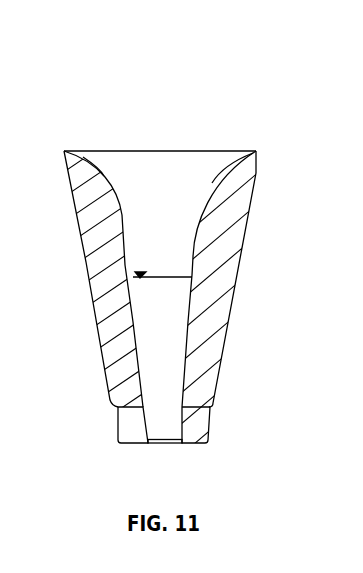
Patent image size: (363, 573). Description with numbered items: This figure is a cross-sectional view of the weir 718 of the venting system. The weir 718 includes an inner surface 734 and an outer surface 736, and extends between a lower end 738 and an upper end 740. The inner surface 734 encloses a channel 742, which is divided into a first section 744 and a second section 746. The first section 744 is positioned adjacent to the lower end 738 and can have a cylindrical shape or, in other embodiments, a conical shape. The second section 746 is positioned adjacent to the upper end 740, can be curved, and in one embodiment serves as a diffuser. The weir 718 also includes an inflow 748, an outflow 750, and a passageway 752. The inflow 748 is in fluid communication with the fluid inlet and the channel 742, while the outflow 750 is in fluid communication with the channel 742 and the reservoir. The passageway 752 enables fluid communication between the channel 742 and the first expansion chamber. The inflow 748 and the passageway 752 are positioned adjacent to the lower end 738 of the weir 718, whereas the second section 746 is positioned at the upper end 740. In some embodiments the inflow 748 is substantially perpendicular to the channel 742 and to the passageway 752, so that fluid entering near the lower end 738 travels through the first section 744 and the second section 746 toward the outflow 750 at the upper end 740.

The weir 718 is at (53, 83).
The inner surface 734 is at (102, 172).
The outflow 750 is at (208, 150).
The upper end 740 is at (257, 152).
The second section 746 is at (179, 206).
The first section 744 is at (179, 326).
The channel 742 is at (132, 278).
The outer surface 736 is at (235, 288).
The inflow 748 is at (132, 429).
The lower end 738 is at (210, 436).
The passageway 752 is at (165, 440).